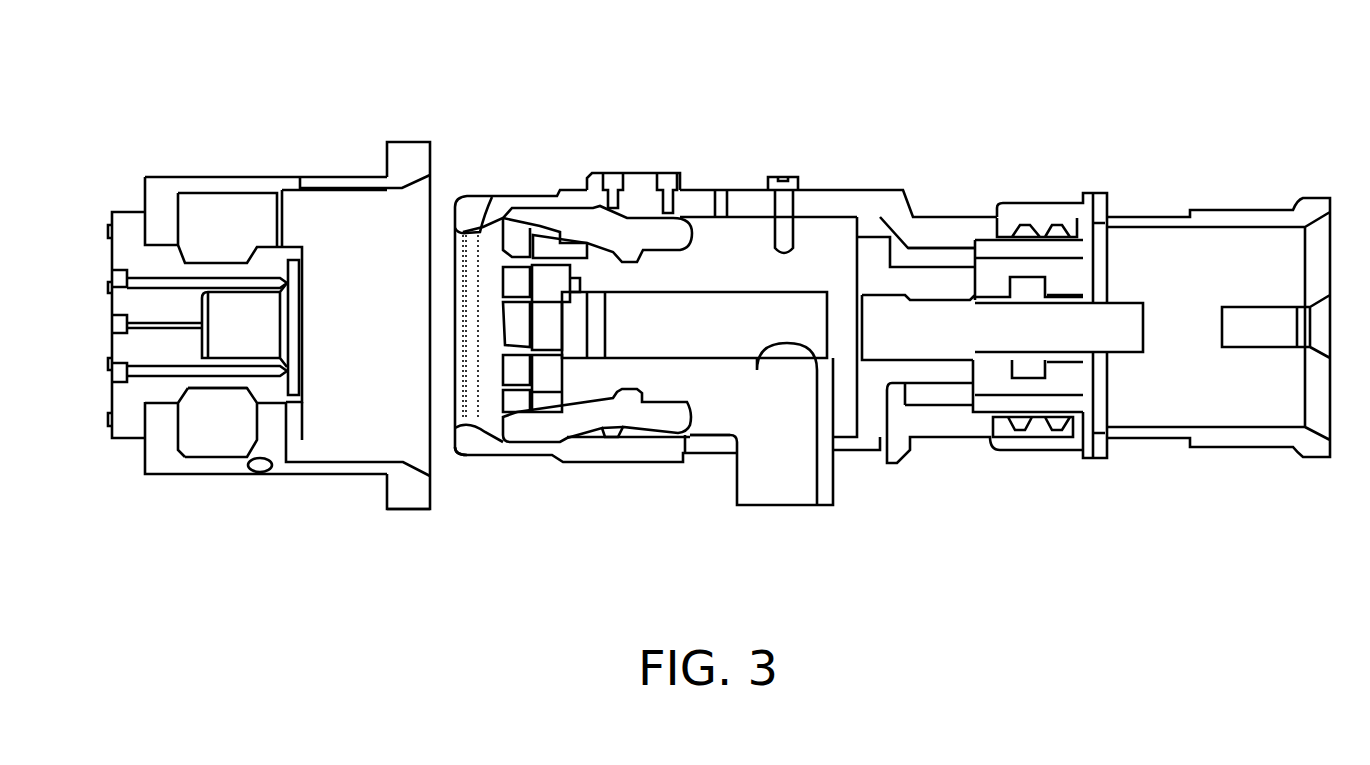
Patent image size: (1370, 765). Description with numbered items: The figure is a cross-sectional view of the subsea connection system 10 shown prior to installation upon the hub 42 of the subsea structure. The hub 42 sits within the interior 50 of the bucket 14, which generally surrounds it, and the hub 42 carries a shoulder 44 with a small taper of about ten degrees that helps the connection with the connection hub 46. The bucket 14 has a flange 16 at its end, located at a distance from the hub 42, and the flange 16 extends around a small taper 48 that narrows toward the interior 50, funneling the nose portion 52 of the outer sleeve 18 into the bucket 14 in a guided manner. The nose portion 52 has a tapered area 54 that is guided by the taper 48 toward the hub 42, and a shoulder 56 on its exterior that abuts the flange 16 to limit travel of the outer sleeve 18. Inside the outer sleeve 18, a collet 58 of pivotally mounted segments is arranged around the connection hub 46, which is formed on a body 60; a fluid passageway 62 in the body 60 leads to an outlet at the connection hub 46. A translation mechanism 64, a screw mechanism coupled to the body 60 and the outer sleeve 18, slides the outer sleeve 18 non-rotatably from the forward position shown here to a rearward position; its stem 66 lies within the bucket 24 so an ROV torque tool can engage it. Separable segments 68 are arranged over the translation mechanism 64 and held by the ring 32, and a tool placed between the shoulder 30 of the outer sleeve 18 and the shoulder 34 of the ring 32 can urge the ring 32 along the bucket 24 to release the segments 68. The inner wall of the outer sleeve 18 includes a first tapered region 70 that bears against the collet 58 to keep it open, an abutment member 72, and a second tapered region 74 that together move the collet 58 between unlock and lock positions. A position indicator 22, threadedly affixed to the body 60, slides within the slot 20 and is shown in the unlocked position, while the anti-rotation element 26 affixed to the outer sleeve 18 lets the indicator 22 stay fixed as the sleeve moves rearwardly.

The subsea connection system 10 is at (934, 165).
The bucket 14 is at (315, 177).
The flange 16 is at (410, 140).
The outer sleeve 18 is at (833, 200).
The slot 20 is at (743, 198).
The position indicator 22 is at (787, 180).
The bucket 24 is at (1228, 208).
The anti-rotation element 26 is at (640, 173).
The shoulder 30 is at (897, 468).
The ring 32 is at (1032, 453).
The shoulder 34 is at (1085, 460).
The hub 42 is at (302, 318).
The shoulder 44 is at (245, 395).
The connection hub 46 is at (575, 365).
The taper 48 is at (418, 490).
The interior 50 is at (337, 452).
The nose portion 52 is at (515, 195).
The tapered area 54 is at (468, 455).
The shoulder 56 is at (555, 192).
The collet 58 is at (600, 448).
The body 60 is at (718, 428).
The fluid passageway 62 is at (790, 490).
The translation mechanism 64 is at (942, 287).
The stem 66 is at (1123, 300).
The separable segments 68 is at (1042, 217).
The first tapered region 70 is at (653, 448).
The abutment member 72 is at (560, 448).
The second tapered region 74 is at (487, 215).